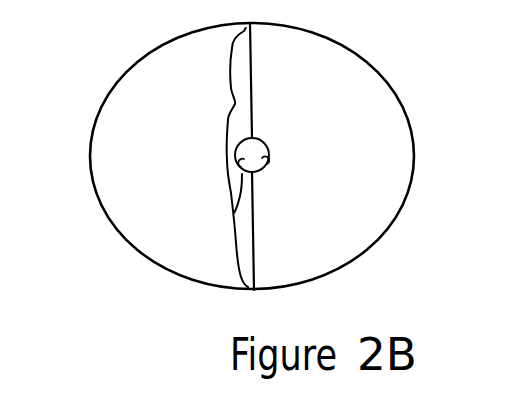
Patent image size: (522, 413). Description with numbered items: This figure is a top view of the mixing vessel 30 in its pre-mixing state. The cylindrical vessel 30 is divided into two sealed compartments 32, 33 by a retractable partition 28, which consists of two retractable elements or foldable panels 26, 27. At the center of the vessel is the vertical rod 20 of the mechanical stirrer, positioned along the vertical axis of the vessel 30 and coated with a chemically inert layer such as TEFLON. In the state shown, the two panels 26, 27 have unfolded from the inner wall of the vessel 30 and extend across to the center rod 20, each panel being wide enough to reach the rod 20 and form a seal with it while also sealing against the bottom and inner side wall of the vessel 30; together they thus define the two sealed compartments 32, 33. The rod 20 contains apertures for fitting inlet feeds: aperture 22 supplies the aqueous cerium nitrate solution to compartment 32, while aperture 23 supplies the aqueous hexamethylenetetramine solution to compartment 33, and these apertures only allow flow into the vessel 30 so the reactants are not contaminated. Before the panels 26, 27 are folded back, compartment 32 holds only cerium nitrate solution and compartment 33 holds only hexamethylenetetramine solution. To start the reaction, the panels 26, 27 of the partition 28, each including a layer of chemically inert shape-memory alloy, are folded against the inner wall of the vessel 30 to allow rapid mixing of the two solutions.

The vertical rod 20 is at (266, 144).
The aperture 22 is at (288, 168).
The aperture 23 is at (236, 203).
The retractable element 26 is at (253, 67).
The retractable element 27 is at (259, 238).
The retractable partition 28 is at (224, 157).
The mixing vessel 30 is at (393, 84).
The compartment 32 is at (368, 195).
The compartment 33 is at (151, 186).